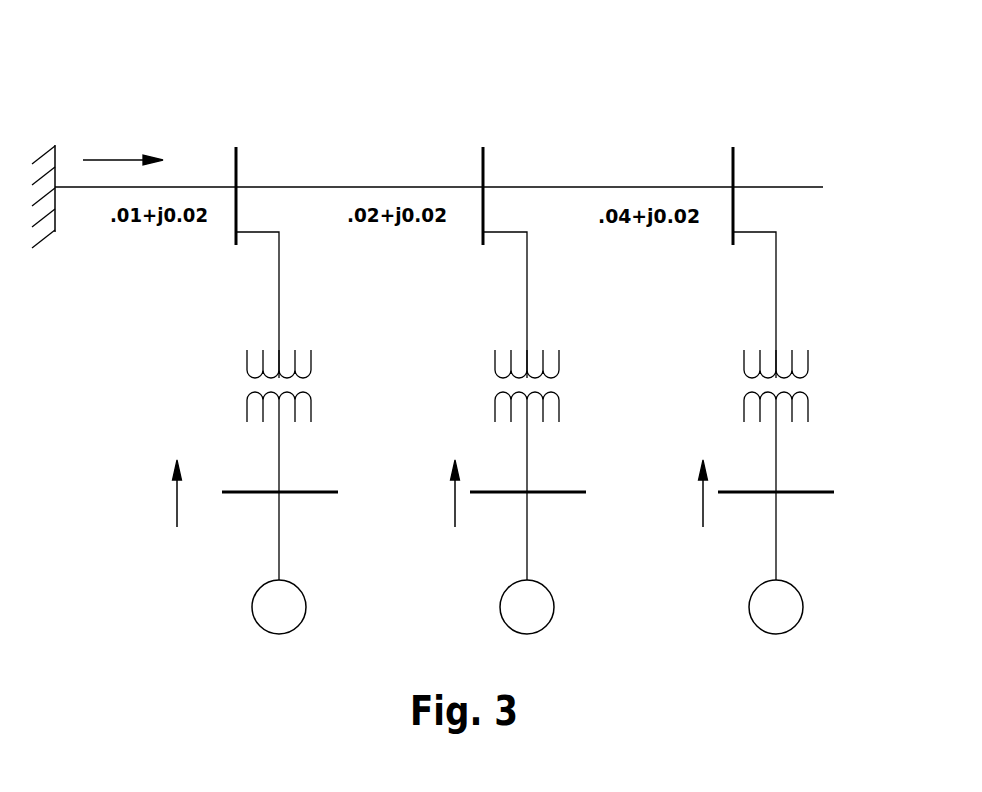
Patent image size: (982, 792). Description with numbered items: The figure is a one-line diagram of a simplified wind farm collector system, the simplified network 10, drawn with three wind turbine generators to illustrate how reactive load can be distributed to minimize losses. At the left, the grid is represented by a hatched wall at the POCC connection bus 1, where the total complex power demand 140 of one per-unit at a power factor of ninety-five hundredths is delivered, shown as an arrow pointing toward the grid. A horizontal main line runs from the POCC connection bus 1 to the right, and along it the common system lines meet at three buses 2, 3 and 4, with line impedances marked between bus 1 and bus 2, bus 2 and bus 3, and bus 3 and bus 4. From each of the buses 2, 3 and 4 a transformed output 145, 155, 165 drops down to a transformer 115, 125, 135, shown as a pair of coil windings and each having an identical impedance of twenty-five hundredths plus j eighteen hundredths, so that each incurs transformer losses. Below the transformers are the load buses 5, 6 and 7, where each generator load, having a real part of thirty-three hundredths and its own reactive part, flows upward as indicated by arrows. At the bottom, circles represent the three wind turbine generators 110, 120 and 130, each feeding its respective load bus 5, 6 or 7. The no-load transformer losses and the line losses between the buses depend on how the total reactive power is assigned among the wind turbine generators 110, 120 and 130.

The POCC connection bus 1 is at (47, 108).
The simplified network 10 is at (400, 27).
The total complex power demand S1 140 is at (117, 128).
The bus 2 is at (234, 157).
The bus 3 is at (482, 157).
The bus 4 is at (732, 157).
The transformed output 145 is at (279, 303).
The transformed output 155 is at (527, 303).
The transformed output 165 is at (776, 303).
The transformer 115 is at (308, 383).
The transformer 125 is at (555, 383).
The transformer 135 is at (803, 383).
The load bus 5 is at (234, 501).
The load bus 6 is at (500, 501).
The load bus 7 is at (749, 501).
The wind turbine generator 110 is at (304, 616).
The wind turbine generator 120 is at (552, 616).
The wind turbine generator 130 is at (801, 616).